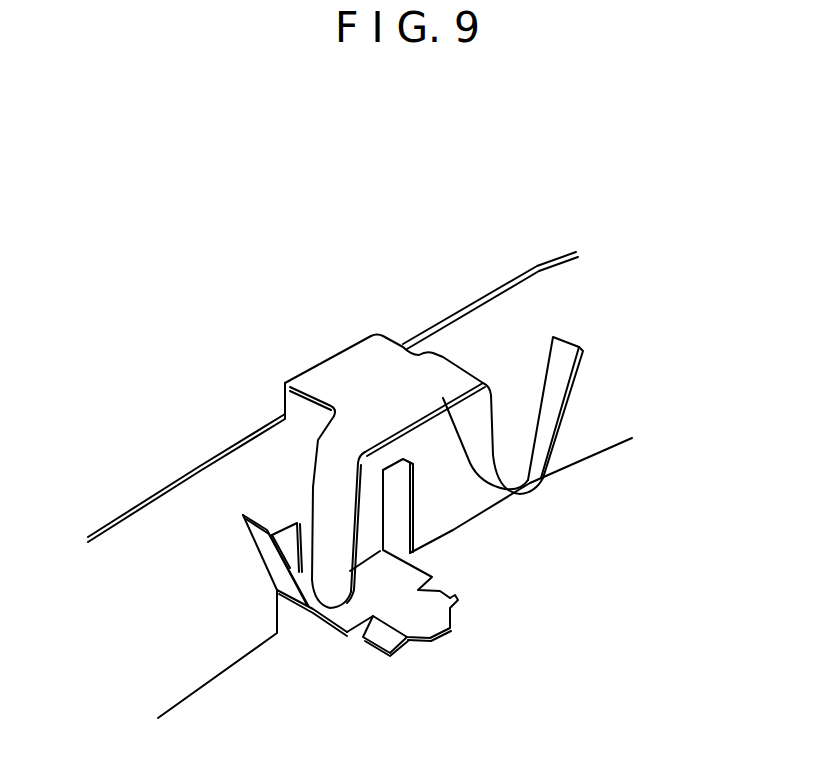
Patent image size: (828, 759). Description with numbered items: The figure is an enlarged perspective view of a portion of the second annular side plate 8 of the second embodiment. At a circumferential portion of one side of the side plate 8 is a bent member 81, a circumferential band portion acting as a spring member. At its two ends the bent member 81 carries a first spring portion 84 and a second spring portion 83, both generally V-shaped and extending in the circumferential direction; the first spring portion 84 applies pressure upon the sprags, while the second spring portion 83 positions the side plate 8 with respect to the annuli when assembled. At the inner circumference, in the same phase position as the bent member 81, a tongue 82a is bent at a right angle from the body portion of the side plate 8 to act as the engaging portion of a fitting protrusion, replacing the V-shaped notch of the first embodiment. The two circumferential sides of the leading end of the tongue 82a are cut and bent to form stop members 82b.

The second annular side plate 8 is at (608, 445).
The bent member 81 is at (340, 372).
The tongue 82a is at (412, 572).
The stop member 82b is at (458, 597).
The second spring portion 83 is at (567, 348).
The first spring portion 84 is at (335, 472).